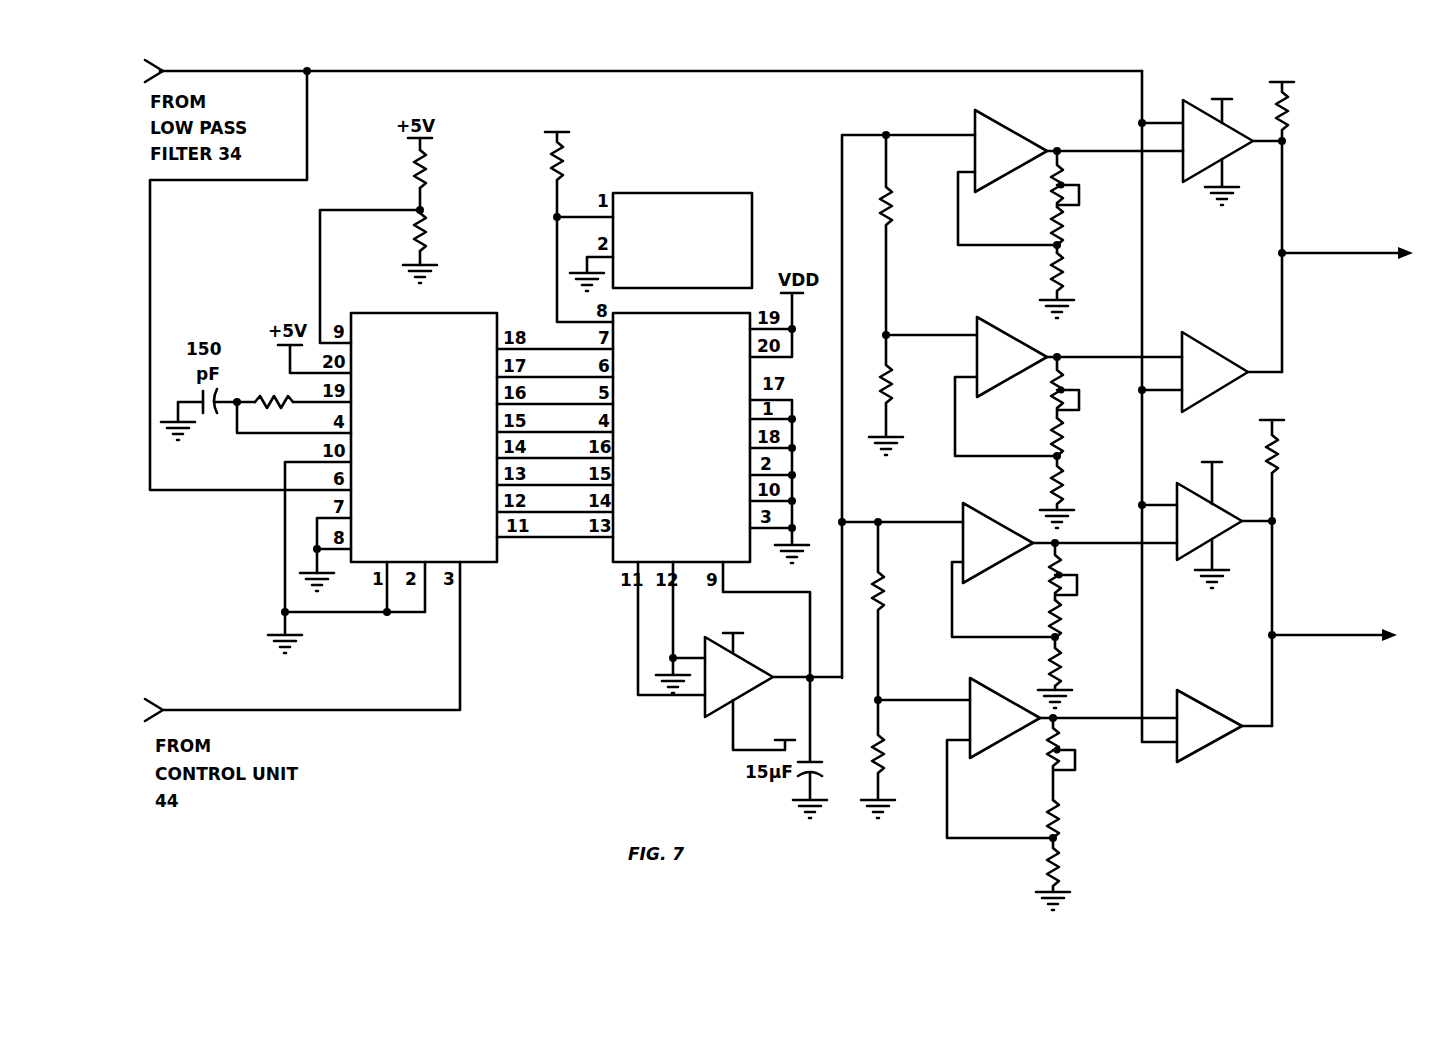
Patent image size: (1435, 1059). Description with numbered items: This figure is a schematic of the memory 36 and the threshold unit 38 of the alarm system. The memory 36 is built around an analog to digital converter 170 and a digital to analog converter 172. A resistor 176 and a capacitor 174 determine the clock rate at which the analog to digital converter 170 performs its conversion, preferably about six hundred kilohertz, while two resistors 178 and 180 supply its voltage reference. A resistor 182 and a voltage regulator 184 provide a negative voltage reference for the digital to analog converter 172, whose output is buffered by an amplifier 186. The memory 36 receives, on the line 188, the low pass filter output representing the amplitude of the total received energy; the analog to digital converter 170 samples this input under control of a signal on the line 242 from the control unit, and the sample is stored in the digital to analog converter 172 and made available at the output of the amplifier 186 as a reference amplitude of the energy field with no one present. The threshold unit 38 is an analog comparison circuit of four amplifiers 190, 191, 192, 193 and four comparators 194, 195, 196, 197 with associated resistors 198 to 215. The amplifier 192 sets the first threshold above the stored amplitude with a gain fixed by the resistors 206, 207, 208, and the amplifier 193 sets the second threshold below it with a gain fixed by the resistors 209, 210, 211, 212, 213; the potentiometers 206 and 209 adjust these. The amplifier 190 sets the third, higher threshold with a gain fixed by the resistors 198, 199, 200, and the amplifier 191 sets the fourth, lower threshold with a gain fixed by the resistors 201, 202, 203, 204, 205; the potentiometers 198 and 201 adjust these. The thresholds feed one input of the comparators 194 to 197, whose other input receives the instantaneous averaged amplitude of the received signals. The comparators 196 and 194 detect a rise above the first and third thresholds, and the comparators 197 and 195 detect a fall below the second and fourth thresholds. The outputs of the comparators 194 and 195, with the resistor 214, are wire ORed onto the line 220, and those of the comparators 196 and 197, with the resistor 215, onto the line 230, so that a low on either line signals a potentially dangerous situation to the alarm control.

The memory 36 is at (550, 535).
The threshold unit 38 is at (1022, 497).
The analog to digital converter 170 is at (472, 313).
The digital to analog converter 172 is at (604, 550).
The capacitor 174 is at (224, 418).
The resistor 176 is at (266, 400).
The resistor 178 is at (430, 192).
The resistor 180 is at (428, 236).
The resistor 182 is at (566, 180).
The voltage regulator 184 is at (684, 193).
The amplifier 186 is at (742, 690).
The line 188 is at (388, 73).
The amplifier 190 is at (1015, 164).
The amplifier 191 is at (1017, 369).
The amplifier 192 is at (1003, 556).
The amplifier 193 is at (1010, 731).
The comparator 194 is at (1220, 154).
The comparator 195 is at (1220, 384).
The comparator 196 is at (1215, 534).
The comparator 197 is at (1215, 739).
The potentiometer 198 is at (1068, 180).
The resistor 199 is at (1068, 228).
The resistor 200 is at (1068, 276).
The potentiometer 201 is at (1068, 387).
The resistor 202 is at (1068, 437).
The resistor 203 is at (1068, 484).
The resistor 204 is at (890, 218).
The resistor 205 is at (892, 392).
The potentiometer 206 is at (1066, 574).
The resistor 207 is at (1066, 620).
The resistor 208 is at (1066, 668).
The potentiometer 209 is at (1064, 748).
The resistor 210 is at (1064, 815).
The resistor 211 is at (1064, 862).
The resistor 212 is at (890, 605).
The resistor 213 is at (892, 767).
The resistor 214 is at (1290, 131).
The resistor 215 is at (1282, 464).
The line 220 is at (1332, 252).
The line 230 is at (1323, 633).
The line 242 is at (222, 709).